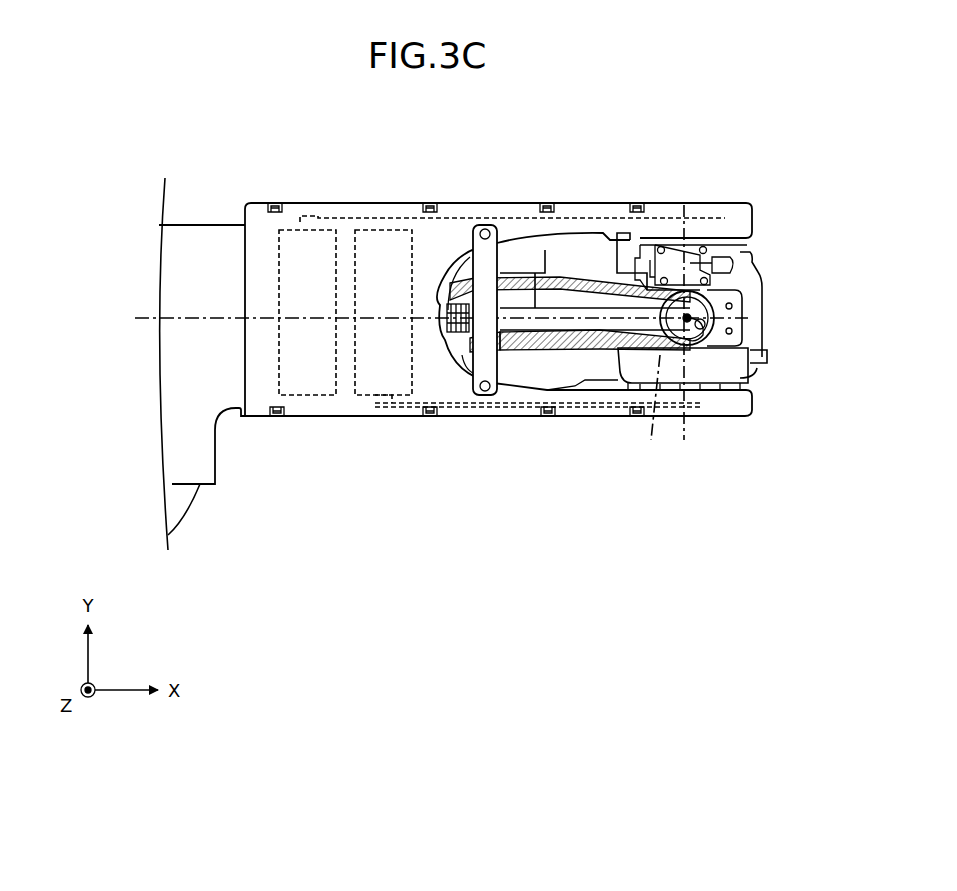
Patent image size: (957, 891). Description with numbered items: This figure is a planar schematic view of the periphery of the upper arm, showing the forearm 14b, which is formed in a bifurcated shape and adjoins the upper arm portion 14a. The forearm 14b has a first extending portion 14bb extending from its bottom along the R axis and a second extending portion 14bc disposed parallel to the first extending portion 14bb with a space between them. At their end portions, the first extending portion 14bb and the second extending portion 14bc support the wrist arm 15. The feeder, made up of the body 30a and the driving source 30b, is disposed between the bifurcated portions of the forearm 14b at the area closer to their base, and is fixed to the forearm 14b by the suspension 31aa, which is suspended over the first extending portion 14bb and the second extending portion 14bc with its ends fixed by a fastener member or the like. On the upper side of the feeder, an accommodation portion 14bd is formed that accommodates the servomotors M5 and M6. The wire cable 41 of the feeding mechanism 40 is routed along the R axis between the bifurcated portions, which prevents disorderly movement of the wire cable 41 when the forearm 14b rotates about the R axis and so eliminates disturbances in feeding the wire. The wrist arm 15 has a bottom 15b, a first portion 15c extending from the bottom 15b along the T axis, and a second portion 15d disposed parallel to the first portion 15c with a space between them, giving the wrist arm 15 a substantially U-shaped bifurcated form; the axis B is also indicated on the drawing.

The first housing portion 14a is at (214, 237).
The forearm 14b is at (265, 426).
The first extending portion 14bb is at (568, 417).
The second extending portion 14bc is at (568, 224).
The accommodation portion 14bd is at (343, 404).
The servomotor M5 is at (291, 229).
The servomotor M6 is at (382, 229).
The body 30a is at (442, 268).
The driving source 30b is at (527, 262).
The belt drive mechanism 40 is at (586, 286).
The wire cable 41 is at (626, 316).
The axis B is at (684, 304).
The T axis T is at (651, 413).
The R axis R is at (430, 318).
The wrist arm 15 is at (770, 246).
The bottom 15b is at (750, 320).
The first portion 15c is at (738, 368).
The second portion 15d is at (760, 270).
The suspension 31aa is at (487, 340).